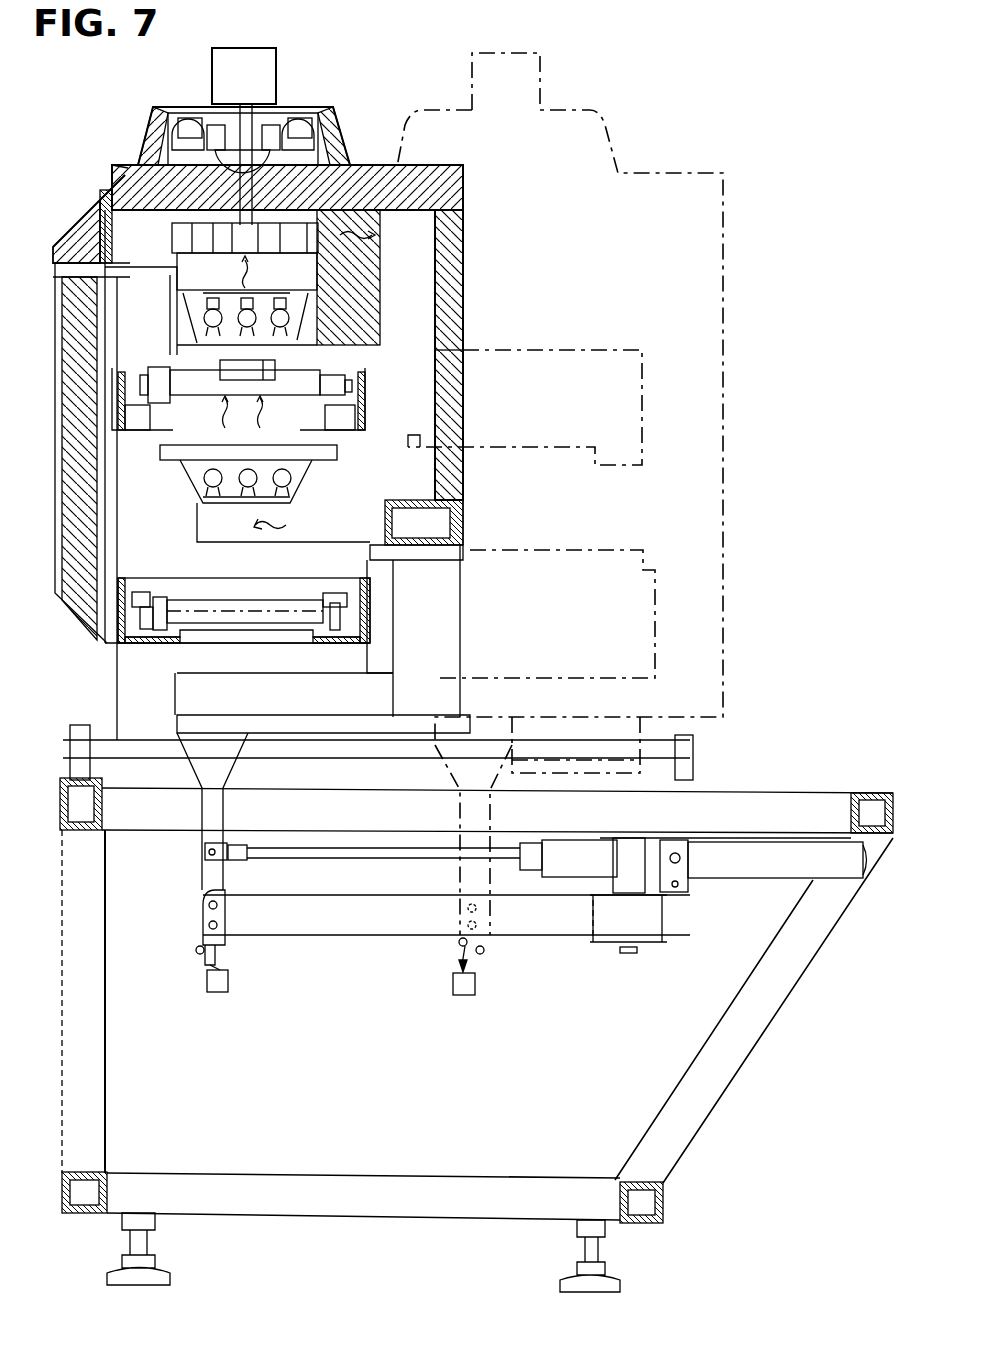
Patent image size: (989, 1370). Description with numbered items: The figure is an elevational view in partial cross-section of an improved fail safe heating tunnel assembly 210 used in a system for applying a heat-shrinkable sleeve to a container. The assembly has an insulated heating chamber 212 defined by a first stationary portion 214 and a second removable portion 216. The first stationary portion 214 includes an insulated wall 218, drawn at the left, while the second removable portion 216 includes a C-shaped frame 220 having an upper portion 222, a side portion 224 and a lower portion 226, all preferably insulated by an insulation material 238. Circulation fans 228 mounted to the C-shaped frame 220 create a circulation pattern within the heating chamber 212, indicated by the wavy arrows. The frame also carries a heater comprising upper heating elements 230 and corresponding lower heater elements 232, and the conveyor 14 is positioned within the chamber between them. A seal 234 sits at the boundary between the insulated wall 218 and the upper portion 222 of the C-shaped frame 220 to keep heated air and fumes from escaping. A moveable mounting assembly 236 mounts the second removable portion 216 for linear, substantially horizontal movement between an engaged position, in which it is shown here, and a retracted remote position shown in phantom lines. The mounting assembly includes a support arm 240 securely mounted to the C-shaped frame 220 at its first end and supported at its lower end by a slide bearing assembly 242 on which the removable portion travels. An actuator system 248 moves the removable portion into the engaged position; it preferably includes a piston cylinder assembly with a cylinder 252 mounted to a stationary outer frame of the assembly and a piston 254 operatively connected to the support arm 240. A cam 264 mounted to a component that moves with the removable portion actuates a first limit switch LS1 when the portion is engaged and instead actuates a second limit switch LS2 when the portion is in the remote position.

The conveyor 14 is at (177, 350).
The fail safe heating tunnel assembly 210 is at (84, 628).
The insulated heating chamber 212 is at (207, 417).
The first stationary portion 214 is at (78, 222).
The second removable portion 216 is at (470, 278).
The insulated wall 218 is at (58, 568).
The C-shaped frame 220 is at (468, 320).
The upper portion 222 is at (430, 178).
The side portion 224 is at (450, 395).
The lower portion 226 is at (370, 560).
The circulation fans 228 is at (303, 147).
The upper heating elements 230 is at (292, 338).
The lower heater elements 232 is at (279, 430).
The seal 234 is at (113, 255).
The moveable mounting assembly 236 is at (500, 688).
The insulation material 238 is at (452, 222).
The support arm 240 is at (425, 634).
The slide bearing assembly 242 is at (476, 982).
The actuator system 248 is at (765, 880).
The cylinder 252 is at (505, 920).
The piston 254 is at (448, 857).
The cam 264 is at (218, 930).
The first limit switch LS1 is at (205, 992).
The second limit switch LS2 is at (464, 996).